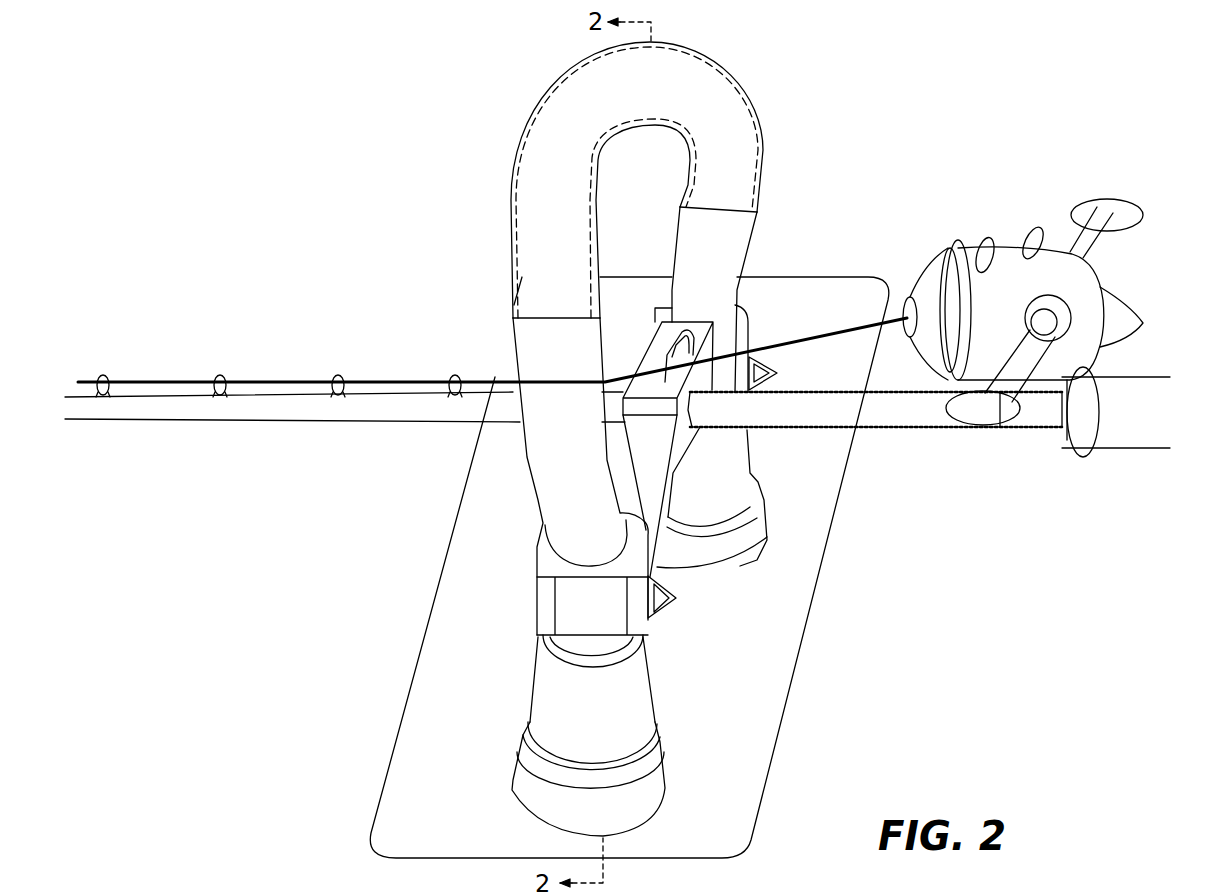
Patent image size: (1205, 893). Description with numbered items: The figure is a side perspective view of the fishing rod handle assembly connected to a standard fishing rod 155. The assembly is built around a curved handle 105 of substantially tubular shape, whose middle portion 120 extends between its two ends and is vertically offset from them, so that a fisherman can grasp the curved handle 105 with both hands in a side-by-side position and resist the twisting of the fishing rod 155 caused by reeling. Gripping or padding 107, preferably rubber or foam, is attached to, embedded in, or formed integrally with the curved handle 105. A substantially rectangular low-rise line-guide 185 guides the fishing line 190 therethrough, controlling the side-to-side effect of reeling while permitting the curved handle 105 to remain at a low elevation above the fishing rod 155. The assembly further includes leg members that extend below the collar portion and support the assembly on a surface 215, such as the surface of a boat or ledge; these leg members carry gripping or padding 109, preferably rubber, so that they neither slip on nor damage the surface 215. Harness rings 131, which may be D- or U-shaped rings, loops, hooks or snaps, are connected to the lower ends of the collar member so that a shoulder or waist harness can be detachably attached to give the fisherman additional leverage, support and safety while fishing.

The curved handle 105 is at (754, 178).
The gripping or padding 107 is at (749, 88).
The gripping or padding 109 is at (740, 448).
The middle portion 120 is at (668, 105).
The harness ring 131 is at (778, 372).
The fishing rod 155 is at (265, 423).
The substantially rectangular low-rise line-guide 185 is at (655, 353).
The fishing line 190 is at (305, 381).
The surface 215 is at (788, 700).